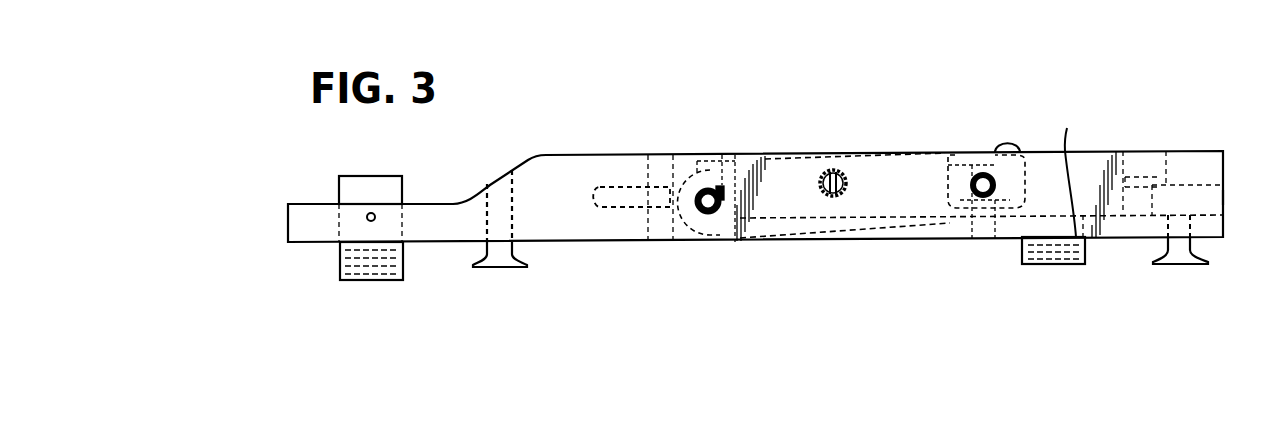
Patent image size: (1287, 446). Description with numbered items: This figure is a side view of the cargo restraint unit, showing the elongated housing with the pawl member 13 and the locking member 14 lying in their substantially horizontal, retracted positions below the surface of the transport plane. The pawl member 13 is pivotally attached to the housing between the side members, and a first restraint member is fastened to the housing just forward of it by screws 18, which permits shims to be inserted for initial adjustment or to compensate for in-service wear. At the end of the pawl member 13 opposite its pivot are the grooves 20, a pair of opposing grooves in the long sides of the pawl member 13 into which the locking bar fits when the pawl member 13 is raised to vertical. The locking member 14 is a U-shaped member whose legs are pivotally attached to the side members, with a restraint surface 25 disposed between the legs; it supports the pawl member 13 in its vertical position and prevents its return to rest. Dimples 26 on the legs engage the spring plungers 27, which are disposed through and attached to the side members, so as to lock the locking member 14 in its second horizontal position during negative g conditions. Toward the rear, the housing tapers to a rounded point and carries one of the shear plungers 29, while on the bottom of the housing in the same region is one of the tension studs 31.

The pawl member 13 is at (897, 197).
The locking member 14 is at (1186, 155).
The screws 18 is at (613, 188).
The grooves 20 is at (967, 165).
The restraint surface 25 is at (1223, 197).
The dimples 26 is at (1117, 153).
The spring plungers 27 is at (825, 197).
The shear plungers 29 is at (390, 176).
The tension studs 31 is at (528, 263).